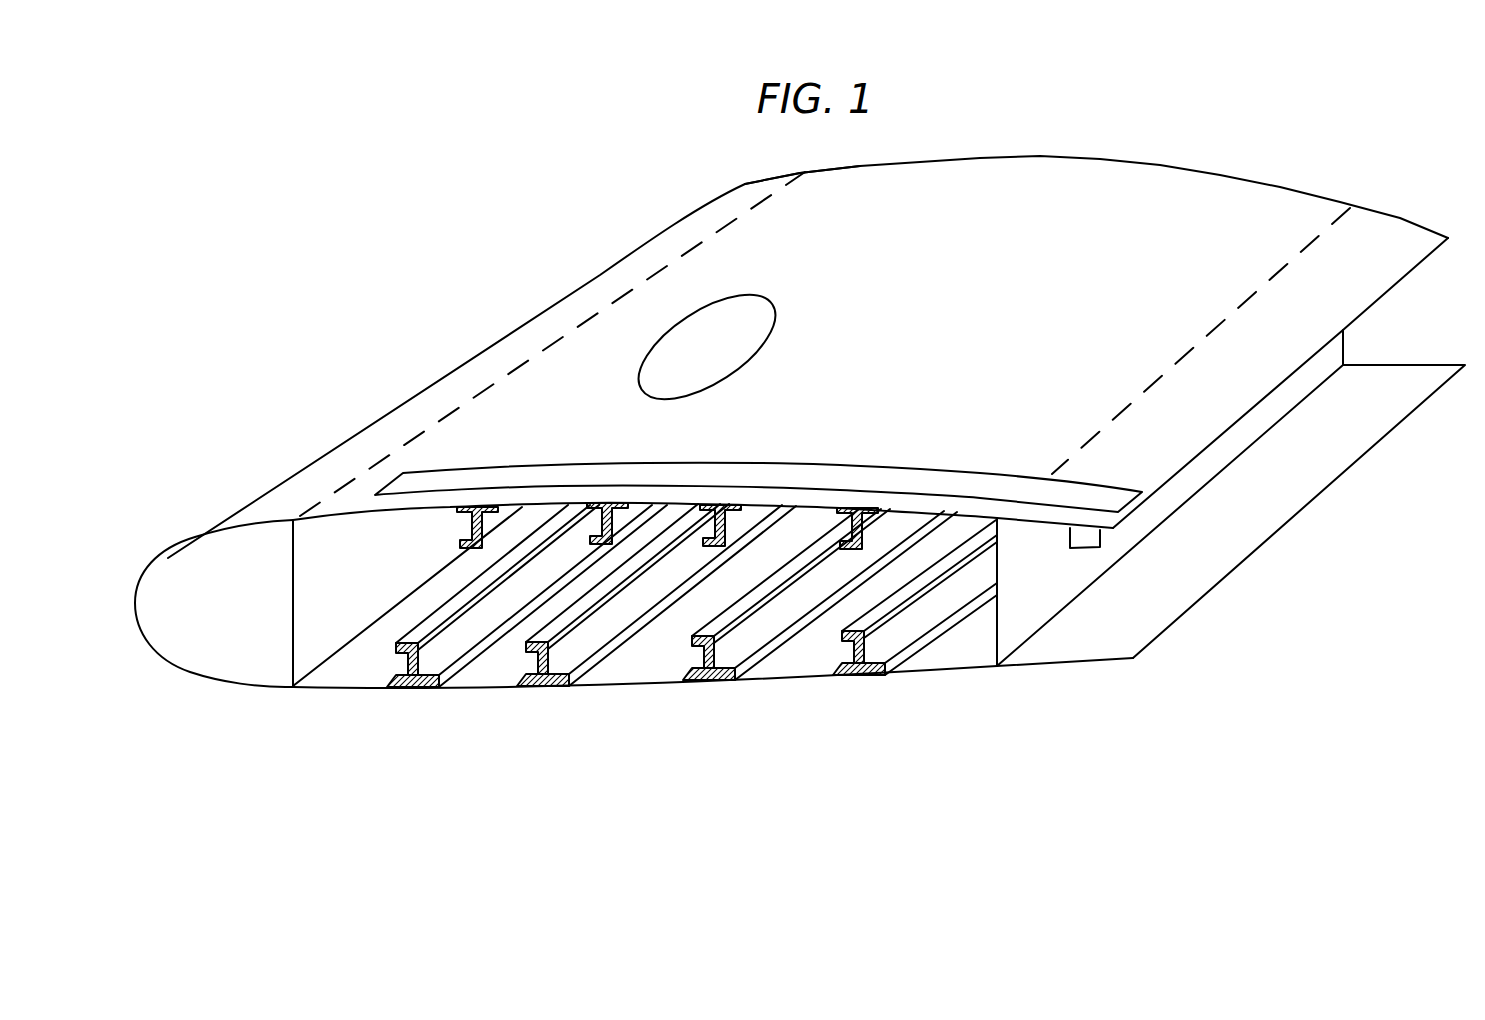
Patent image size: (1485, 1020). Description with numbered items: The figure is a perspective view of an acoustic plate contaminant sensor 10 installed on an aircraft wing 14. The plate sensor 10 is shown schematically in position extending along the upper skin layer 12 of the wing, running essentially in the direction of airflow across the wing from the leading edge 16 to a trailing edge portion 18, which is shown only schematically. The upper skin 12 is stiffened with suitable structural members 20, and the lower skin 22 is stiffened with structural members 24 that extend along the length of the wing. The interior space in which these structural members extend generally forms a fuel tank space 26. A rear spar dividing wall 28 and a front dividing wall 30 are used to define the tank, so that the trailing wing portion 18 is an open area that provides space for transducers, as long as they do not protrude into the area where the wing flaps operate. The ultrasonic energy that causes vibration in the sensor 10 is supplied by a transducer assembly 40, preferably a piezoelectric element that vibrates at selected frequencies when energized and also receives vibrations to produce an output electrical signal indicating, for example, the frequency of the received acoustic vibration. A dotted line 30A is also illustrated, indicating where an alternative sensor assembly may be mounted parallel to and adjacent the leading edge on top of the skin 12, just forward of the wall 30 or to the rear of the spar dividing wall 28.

The acoustic plate contaminant sensor 10 is at (920, 465).
The upper skin layer 12 is at (1065, 187).
The aircraft wing 14 is at (739, 189).
The leading edge 16 is at (300, 472).
The trailing edge portion 18 is at (1213, 428).
The structural members 20 is at (590, 520).
The lower skin 22 is at (351, 692).
The structural members 24 is at (700, 645).
The fuel tank space 26 is at (318, 637).
The rear spar dividing wall 28 is at (1325, 362).
The front dividing wall 30 is at (290, 637).
The dotted line 30A is at (518, 365).
The transducer assembly 40 is at (1122, 546).